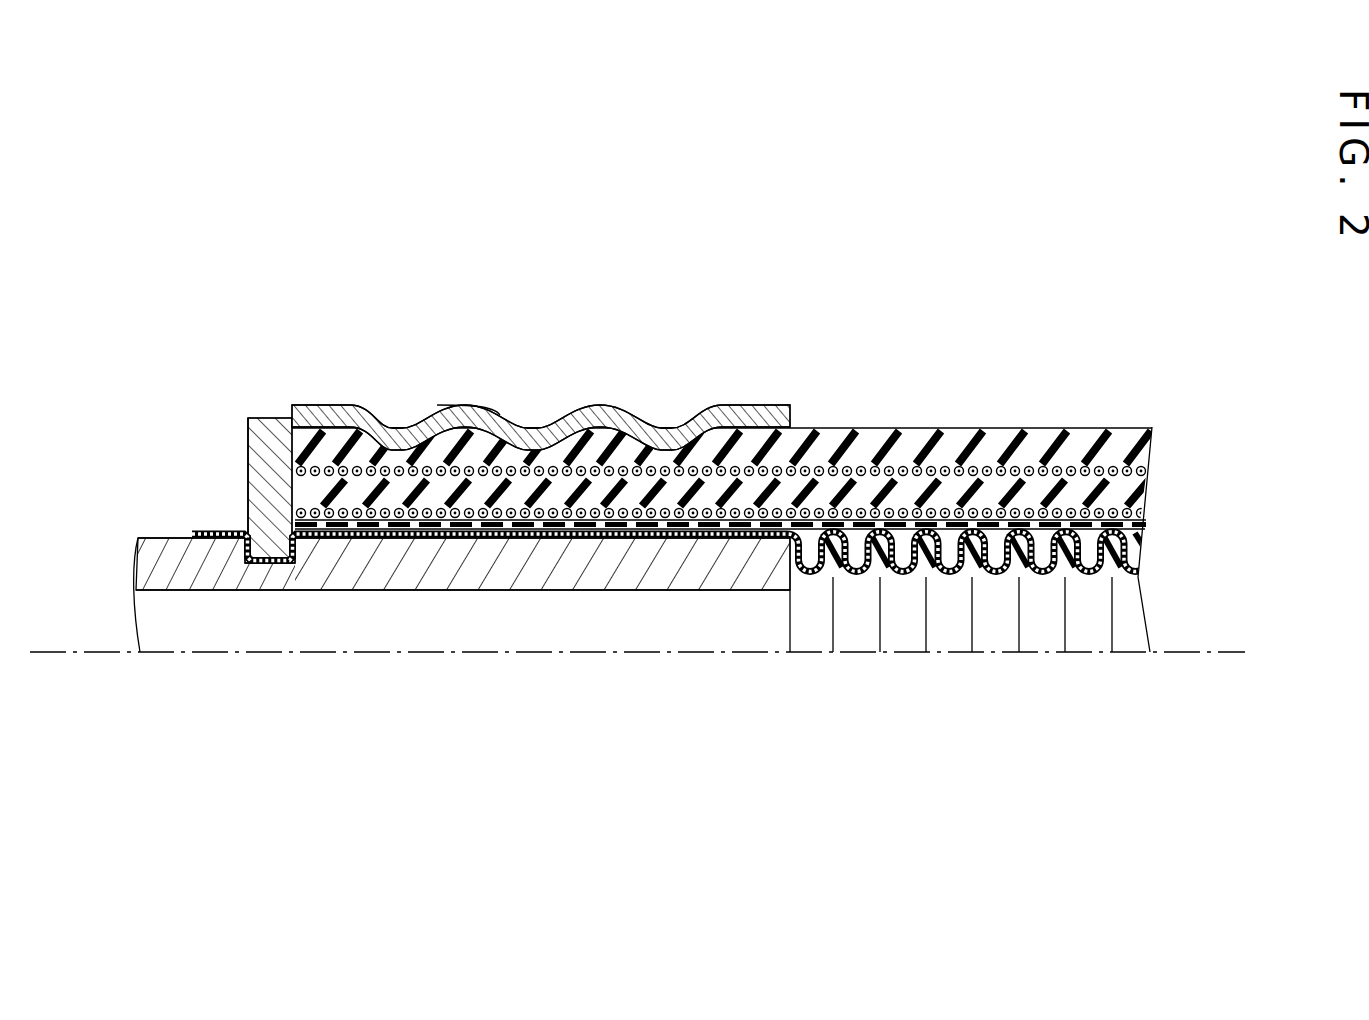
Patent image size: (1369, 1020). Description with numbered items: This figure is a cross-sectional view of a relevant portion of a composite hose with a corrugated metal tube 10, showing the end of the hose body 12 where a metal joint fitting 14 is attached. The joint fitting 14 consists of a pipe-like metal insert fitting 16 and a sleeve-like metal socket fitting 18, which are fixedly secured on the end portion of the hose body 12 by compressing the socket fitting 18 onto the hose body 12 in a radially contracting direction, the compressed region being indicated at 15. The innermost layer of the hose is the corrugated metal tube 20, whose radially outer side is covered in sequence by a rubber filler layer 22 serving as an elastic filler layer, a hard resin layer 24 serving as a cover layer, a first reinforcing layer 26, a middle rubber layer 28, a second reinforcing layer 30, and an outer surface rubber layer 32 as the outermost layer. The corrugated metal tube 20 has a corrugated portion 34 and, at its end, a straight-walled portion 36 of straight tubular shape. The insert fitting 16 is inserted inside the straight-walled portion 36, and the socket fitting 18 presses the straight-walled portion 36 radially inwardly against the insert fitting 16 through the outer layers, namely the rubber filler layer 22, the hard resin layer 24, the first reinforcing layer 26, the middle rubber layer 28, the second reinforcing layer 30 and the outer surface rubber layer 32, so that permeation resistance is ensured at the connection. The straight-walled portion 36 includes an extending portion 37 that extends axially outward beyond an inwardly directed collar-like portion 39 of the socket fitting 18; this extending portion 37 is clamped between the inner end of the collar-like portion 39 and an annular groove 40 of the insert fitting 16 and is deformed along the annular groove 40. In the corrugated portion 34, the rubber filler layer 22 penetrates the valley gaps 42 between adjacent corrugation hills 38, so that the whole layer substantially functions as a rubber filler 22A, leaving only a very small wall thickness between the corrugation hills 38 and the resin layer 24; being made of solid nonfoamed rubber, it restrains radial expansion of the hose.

The composite hose with a corrugated metal tube 10 is at (900, 288).
The hose body 12 is at (722, 449).
The metal joint fitting 14 is at (467, 393).
The compressed end portion of the hose body 15 is at (397, 427).
The insert fitting 16 is at (380, 588).
The socket fitting 18 is at (340, 404).
The corrugated metal tube 20 is at (646, 595).
The rubber filler layer 22 is at (643, 573).
The rubber filler 22A is at (947, 553).
The hard resin layer 24 is at (1083, 575).
The first reinforcing layer 26 is at (1057, 513).
The middle rubber layer 28 is at (987, 490).
The second reinforcing layer 30 is at (903, 470).
The outer surface rubber layer 32 is at (835, 438).
The corrugated portion 34 is at (858, 590).
The straight-walled portion 36 is at (643, 537).
The extending portion 37 is at (198, 532).
The corrugation hills 38 is at (928, 540).
The inwardly directed collar-like portion 39 is at (247, 460).
The annular groove 40 is at (287, 563).
The valley gaps 42 is at (901, 577).